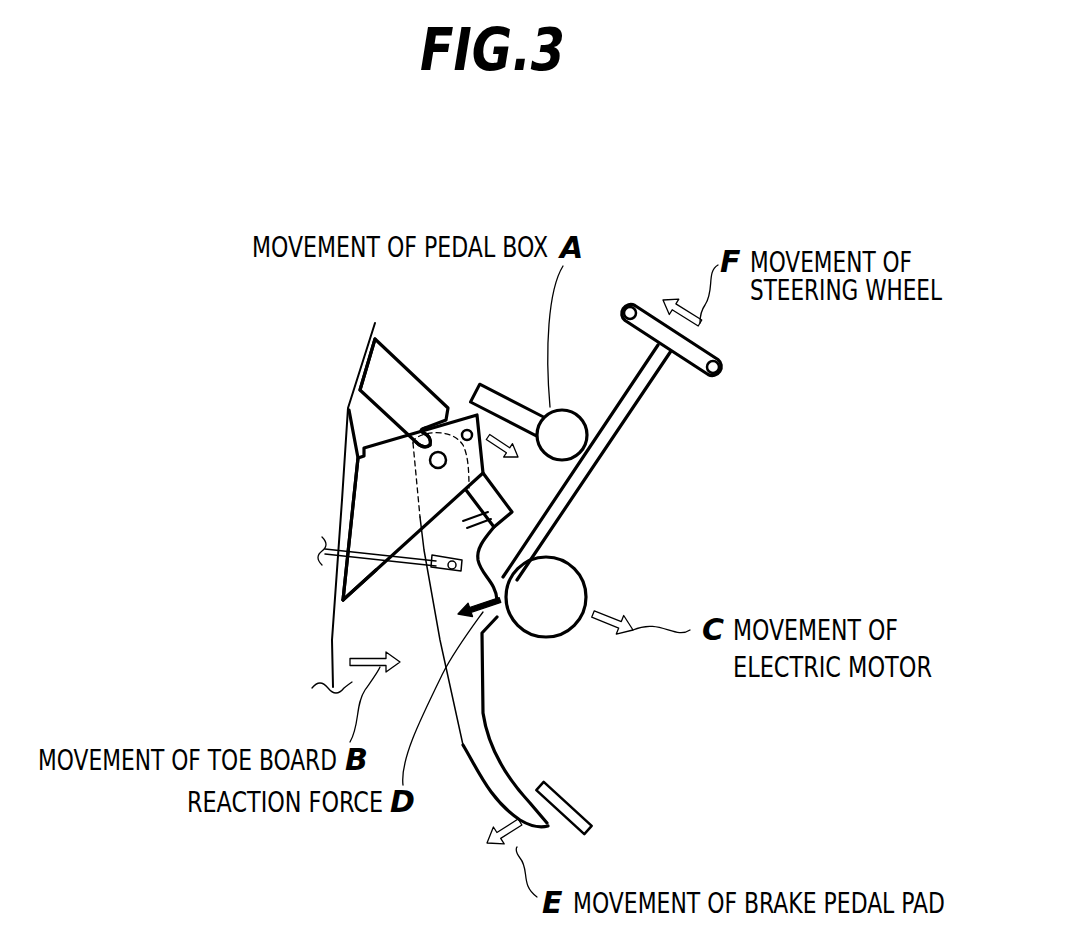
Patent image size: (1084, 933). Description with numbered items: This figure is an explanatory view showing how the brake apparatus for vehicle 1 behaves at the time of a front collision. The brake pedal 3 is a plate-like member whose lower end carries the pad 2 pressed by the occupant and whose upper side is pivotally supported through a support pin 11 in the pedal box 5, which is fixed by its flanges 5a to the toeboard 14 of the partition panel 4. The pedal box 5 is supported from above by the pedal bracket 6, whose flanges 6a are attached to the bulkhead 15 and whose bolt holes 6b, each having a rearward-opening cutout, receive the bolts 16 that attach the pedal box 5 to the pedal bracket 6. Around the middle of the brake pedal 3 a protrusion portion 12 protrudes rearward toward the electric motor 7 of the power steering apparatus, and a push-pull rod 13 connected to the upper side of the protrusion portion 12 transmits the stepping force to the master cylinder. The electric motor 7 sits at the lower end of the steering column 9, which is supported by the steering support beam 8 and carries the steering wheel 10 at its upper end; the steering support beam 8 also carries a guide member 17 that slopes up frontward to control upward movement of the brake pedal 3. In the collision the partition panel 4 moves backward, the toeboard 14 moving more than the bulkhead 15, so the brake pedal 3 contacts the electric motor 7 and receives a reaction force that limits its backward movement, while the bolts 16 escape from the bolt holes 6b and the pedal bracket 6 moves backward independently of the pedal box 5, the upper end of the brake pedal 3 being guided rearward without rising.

The brake apparatus for vehicle 1 is at (545, 661).
The pad 2 is at (576, 807).
The brake pedal 3 is at (475, 750).
The partition panel 4 is at (350, 440).
The pedal box 5 is at (356, 512).
The flange 5a is at (342, 593).
The pedal bracket 6 is at (387, 380).
The flange 6a is at (380, 380).
The bolt hole 6b is at (418, 418).
The electric motor 7 is at (580, 563).
The steering support beam 8 is at (563, 410).
The steering column 9 is at (657, 390).
The steering wheel 10 is at (640, 308).
The support pin 11 is at (430, 462).
The protrusion portion 12 is at (497, 617).
The push-pull rod 13 is at (405, 560).
The toeboard 14 is at (332, 630).
The bulkhead 15 is at (370, 340).
The bolt 16 is at (467, 428).
The guide member 17 is at (495, 403).